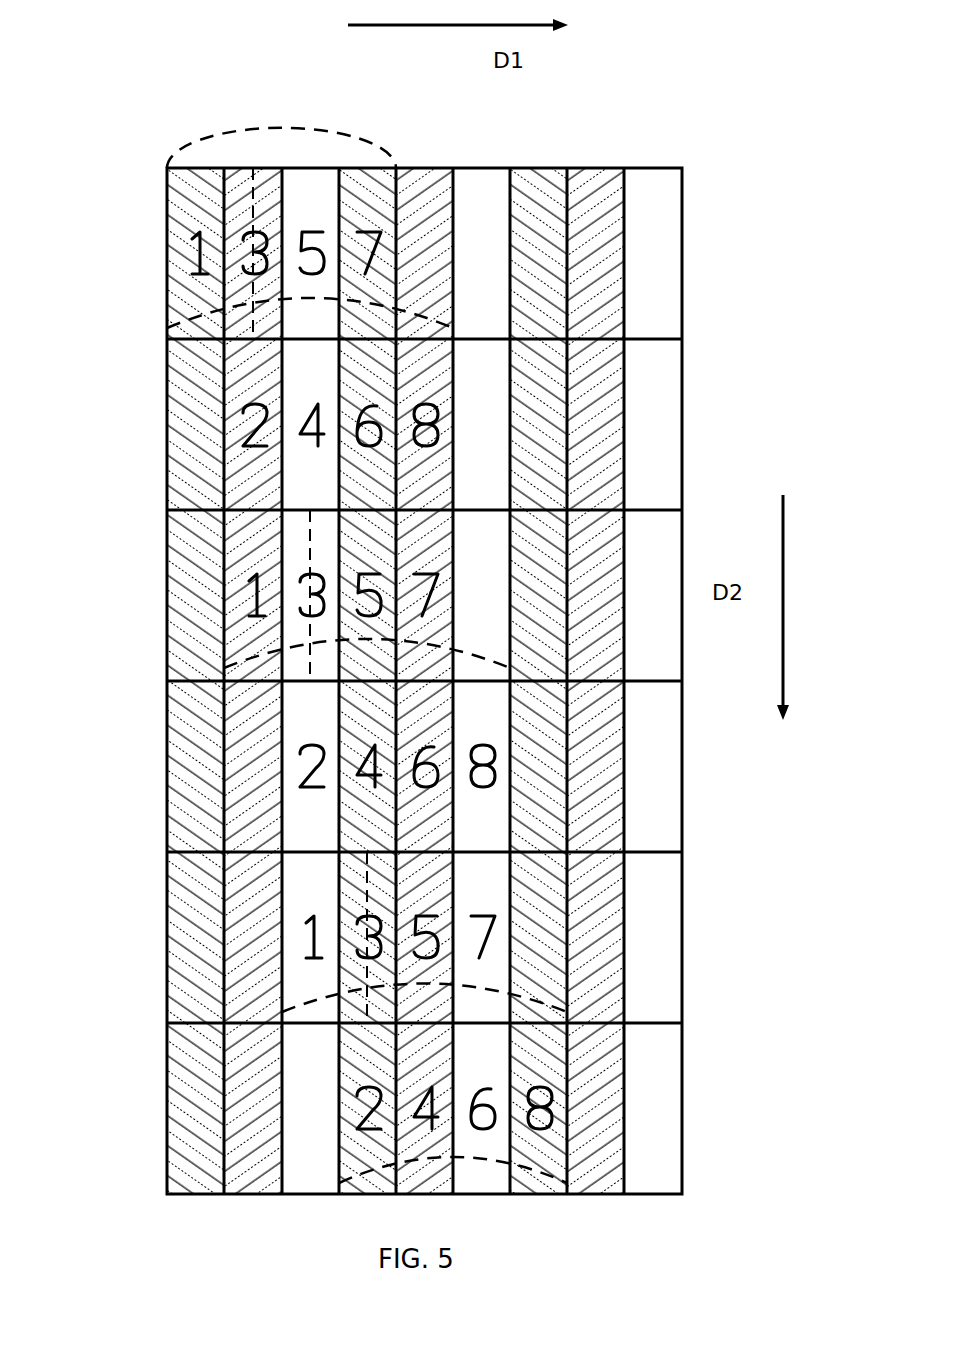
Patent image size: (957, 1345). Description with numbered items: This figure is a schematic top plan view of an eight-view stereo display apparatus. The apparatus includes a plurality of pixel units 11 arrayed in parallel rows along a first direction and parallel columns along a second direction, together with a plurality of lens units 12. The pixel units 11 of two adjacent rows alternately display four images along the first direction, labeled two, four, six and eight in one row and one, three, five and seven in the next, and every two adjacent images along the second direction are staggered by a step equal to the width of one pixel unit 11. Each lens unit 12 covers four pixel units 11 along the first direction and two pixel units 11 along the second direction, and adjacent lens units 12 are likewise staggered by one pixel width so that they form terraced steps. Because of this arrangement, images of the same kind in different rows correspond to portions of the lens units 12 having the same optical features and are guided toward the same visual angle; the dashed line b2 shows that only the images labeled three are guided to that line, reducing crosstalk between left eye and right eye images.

The pixel unit 11 is at (650, 282).
The lens unit 12 is at (348, 133).
The dashed line b2 is at (307, 552).